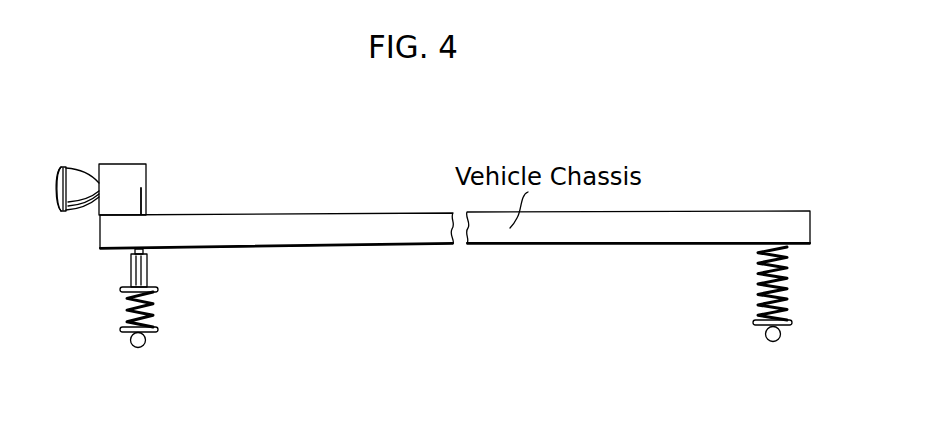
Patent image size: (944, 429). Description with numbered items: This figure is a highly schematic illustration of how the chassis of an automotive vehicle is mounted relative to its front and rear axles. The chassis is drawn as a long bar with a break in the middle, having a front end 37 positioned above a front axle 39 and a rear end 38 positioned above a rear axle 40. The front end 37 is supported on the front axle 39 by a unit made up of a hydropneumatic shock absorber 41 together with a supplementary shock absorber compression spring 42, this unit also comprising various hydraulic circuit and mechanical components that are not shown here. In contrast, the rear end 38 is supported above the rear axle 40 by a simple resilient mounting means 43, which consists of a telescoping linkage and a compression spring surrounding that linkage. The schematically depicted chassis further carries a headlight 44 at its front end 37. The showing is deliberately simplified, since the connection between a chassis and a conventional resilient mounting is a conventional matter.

The front end of the chassis 37 is at (157, 230).
The rear end of the chassis 38 is at (750, 222).
The front axle 39 is at (148, 342).
The rear axle 40 is at (766, 337).
The hydropneumatic shock absorber 41 is at (132, 272).
The supplementary shock absorber compression spring 42 is at (150, 320).
The resilient mounting means 43 is at (760, 282).
The headlight 44 is at (73, 182).